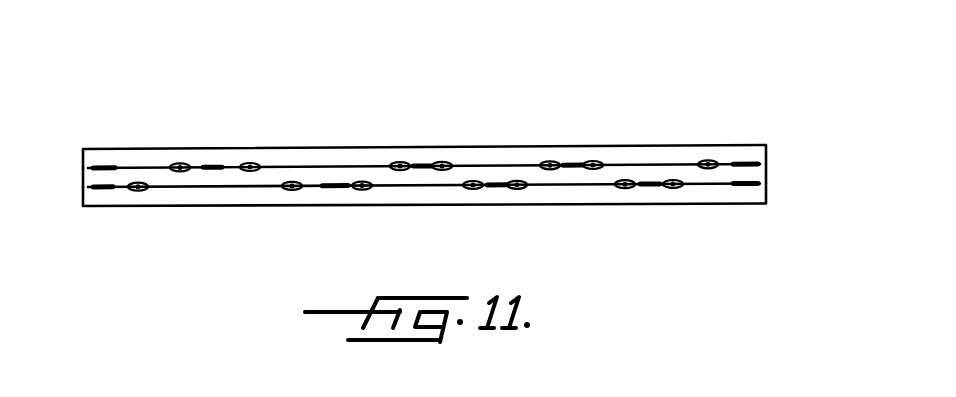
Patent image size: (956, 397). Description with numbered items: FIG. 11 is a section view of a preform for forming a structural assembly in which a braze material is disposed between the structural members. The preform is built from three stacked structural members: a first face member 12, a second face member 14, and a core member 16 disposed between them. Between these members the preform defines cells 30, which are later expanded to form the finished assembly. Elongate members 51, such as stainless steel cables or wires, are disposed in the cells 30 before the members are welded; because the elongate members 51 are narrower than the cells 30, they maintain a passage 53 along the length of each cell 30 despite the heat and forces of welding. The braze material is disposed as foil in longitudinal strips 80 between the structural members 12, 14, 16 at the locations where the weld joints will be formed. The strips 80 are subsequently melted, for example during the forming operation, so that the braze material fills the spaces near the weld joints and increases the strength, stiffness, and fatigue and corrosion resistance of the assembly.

The first face member 12 is at (759, 145).
The second face member 14 is at (760, 193).
The core member 16 is at (764, 170).
The cell 30 is at (627, 158).
The elongate member 51 is at (138, 186).
The passage 53 is at (287, 169).
The longitudinal strip of braze material 80 is at (103, 168).